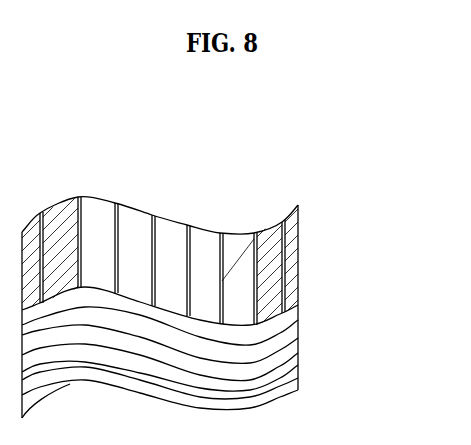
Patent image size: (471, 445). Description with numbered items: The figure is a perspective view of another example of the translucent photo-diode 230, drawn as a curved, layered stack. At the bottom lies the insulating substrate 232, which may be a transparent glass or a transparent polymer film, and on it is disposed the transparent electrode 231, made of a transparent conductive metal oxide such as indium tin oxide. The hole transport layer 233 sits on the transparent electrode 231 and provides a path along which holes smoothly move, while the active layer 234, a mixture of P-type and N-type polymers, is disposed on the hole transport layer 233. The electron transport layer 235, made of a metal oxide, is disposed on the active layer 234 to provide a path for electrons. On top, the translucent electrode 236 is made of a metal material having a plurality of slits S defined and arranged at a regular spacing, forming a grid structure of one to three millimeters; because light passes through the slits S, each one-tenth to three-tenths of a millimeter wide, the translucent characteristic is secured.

The translucent photo-diode 230 is at (327, 162).
The slits S is at (182, 260).
The translucent electrode 236 is at (300, 290).
The electron transport layer 235 is at (300, 317).
The active layer 234 is at (300, 337).
The hole transport layer 233 is at (300, 353).
The transparent electrode 231 is at (300, 368).
The insulating substrate 232 is at (300, 380).